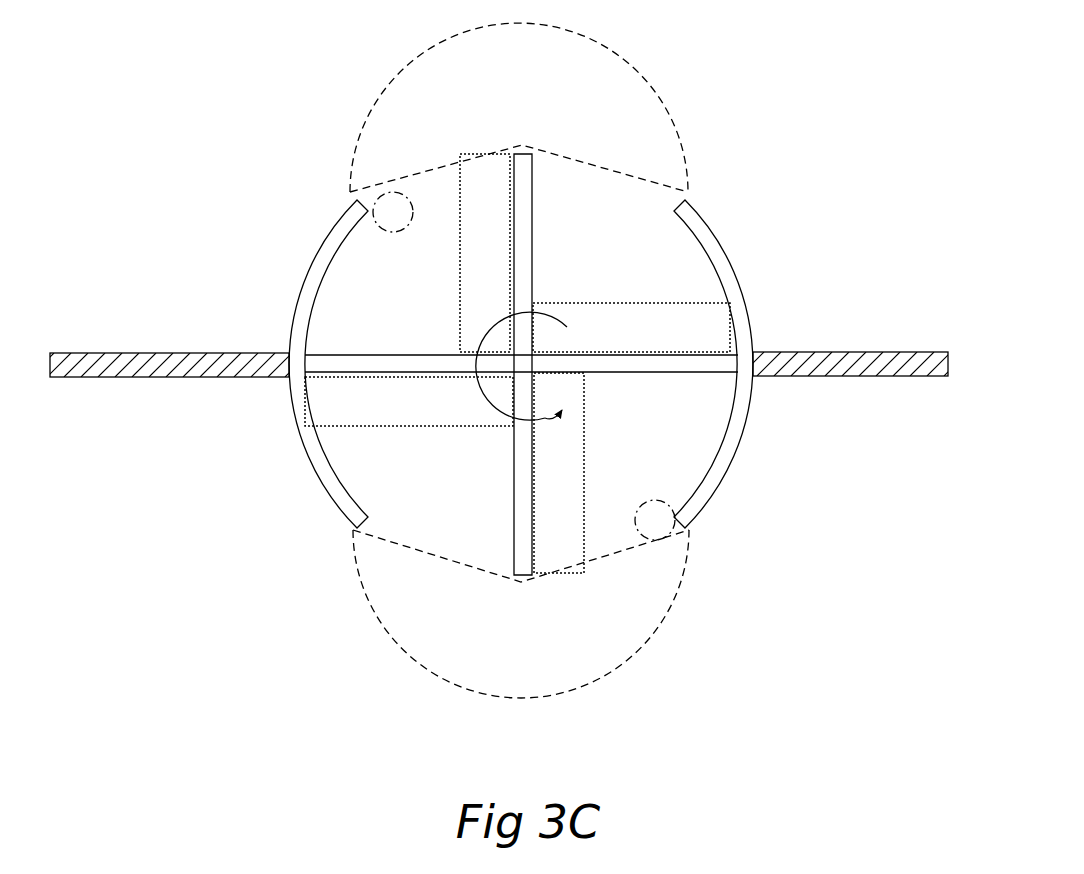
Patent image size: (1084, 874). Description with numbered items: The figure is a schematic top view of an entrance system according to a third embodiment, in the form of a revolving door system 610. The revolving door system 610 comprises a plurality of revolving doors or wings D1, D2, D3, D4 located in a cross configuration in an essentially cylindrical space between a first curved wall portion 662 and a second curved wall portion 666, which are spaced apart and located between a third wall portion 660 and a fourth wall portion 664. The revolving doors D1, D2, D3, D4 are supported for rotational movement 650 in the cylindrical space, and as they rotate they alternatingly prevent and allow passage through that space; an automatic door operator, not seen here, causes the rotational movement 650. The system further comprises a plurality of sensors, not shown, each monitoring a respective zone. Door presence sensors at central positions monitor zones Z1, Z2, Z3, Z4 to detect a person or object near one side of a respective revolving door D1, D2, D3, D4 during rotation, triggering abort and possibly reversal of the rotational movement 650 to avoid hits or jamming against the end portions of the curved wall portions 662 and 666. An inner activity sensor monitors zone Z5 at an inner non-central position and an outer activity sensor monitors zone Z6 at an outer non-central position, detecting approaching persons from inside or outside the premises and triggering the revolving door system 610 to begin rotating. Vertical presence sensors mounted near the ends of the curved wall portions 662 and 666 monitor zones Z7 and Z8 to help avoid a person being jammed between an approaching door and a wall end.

The revolving door system 610 is at (181, 155).
The rotational movement 650 is at (550, 423).
The third wall portion 660 is at (192, 360).
The first curved wall portion 662 is at (305, 425).
The fourth wall portion 664 is at (833, 360).
The second curved wall portion 666 is at (738, 433).
The zone Z1 is at (474, 272).
The zone Z2 is at (626, 341).
The zone Z3 is at (547, 494).
The zone Z4 is at (402, 413).
The zone Z5 is at (514, 99).
The zone Z6 is at (514, 645).
The zone Z7 is at (374, 217).
The zone Z8 is at (680, 533).
The revolving door D1 is at (526, 250).
The revolving door D2 is at (703, 367).
The revolving door D3 is at (520, 513).
The revolving door D4 is at (387, 360).